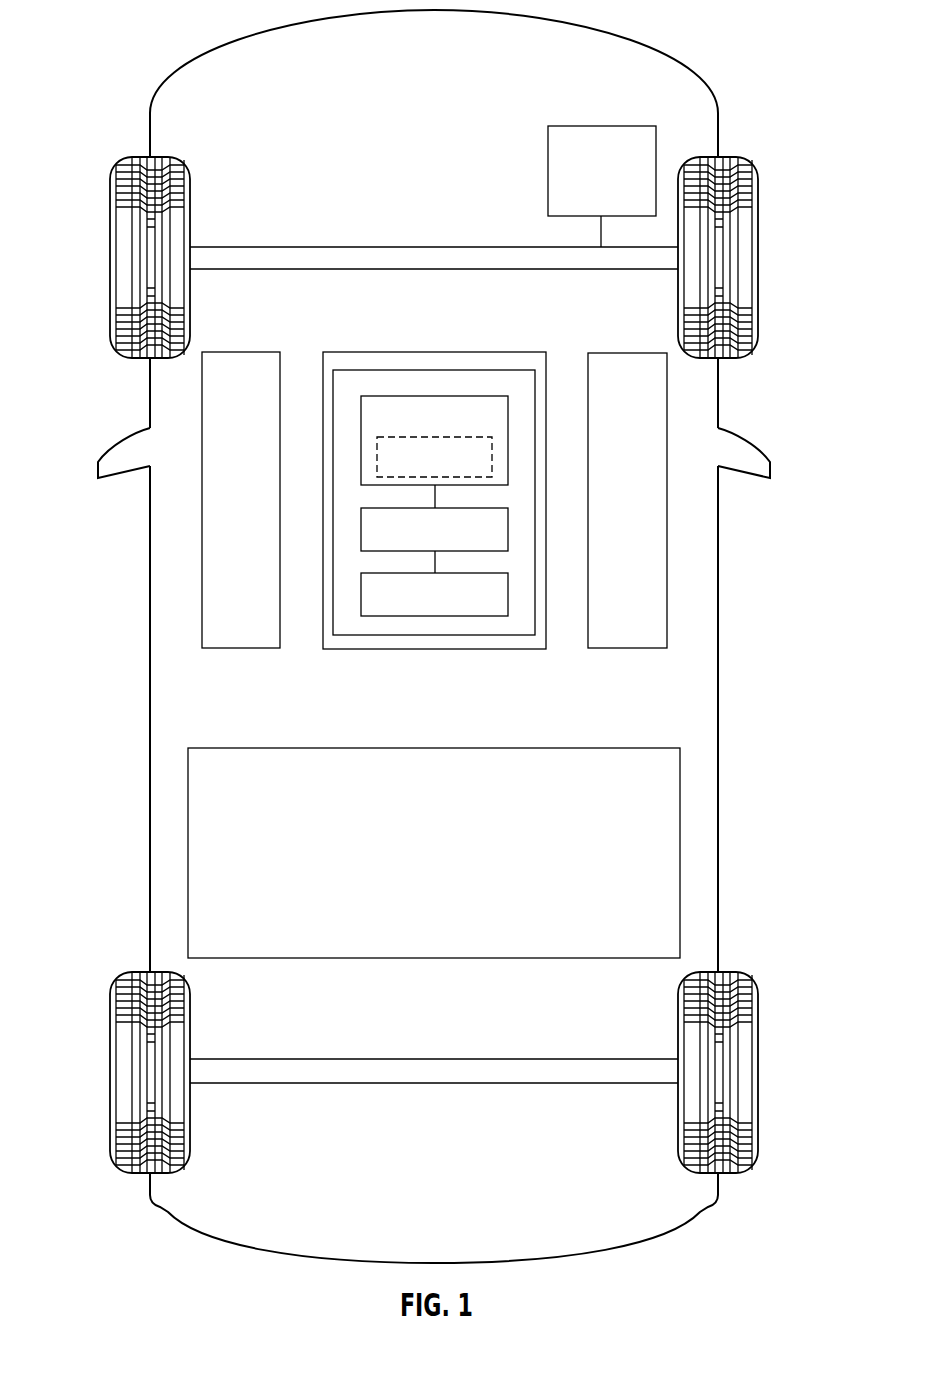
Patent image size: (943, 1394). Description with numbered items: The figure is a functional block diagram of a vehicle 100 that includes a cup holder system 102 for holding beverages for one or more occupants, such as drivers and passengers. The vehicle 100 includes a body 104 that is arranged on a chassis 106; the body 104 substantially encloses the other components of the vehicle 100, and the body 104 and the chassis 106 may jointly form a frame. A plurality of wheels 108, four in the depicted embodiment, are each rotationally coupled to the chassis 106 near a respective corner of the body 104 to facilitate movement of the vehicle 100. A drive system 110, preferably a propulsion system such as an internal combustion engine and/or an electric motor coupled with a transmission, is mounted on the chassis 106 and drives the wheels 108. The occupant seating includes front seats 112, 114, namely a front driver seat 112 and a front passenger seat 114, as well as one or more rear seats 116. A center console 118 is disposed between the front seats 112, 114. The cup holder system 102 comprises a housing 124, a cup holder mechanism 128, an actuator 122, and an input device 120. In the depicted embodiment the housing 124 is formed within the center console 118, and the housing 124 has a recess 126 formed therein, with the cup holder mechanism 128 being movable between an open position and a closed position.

The vehicle 100 is at (416, 636).
The cup holder system 102 is at (378, 389).
The body 104 is at (150, 558).
The chassis 106 is at (348, 234).
The wheels 108 is at (130, 265).
The drive system 110 is at (621, 185).
The front driver seat 112 is at (261, 515).
The front passenger seat 114 is at (646, 515).
The rear seats 116 is at (453, 865).
The center console 118 is at (532, 352).
The input device 120 is at (454, 607).
The actuator 122 is at (454, 542).
The housing 124 is at (410, 396).
The recess 126 is at (454, 432).
The cup holder mechanism 128 is at (454, 472).